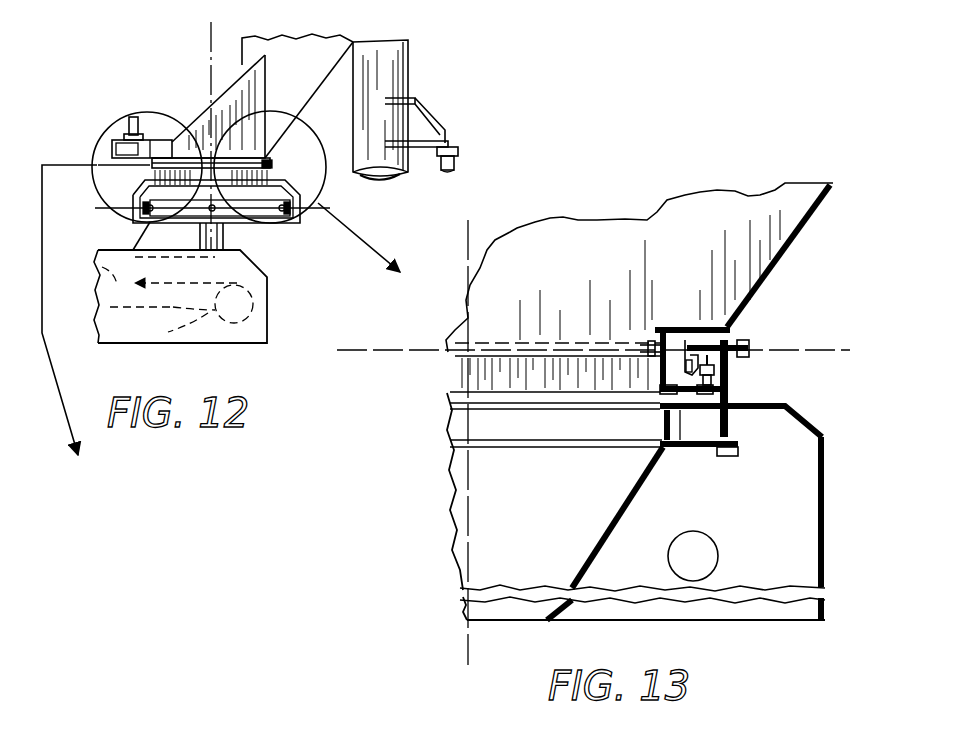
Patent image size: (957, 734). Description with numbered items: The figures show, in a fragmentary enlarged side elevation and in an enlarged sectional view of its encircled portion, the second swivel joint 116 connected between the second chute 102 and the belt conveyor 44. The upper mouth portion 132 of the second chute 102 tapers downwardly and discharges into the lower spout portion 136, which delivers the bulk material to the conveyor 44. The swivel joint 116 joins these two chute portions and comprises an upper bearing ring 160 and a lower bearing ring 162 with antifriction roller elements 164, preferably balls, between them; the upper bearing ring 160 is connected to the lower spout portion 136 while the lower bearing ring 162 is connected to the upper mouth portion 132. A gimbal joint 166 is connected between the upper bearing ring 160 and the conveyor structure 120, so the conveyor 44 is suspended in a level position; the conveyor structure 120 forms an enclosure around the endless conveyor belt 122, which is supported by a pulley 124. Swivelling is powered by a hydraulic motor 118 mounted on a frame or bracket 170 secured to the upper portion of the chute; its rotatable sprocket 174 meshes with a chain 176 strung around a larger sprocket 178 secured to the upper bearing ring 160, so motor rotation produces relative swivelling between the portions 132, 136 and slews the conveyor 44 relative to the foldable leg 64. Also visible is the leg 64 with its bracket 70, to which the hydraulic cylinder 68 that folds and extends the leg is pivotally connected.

In FIG. 12, the conveyor 44 is at (228, 348).
In FIG. 12, the foldable leg 64 is at (412, 67).
In FIG. 12, the hydraulic cylinder 68 is at (458, 160).
In FIG. 12, the bracket 70 is at (446, 122).
In FIG. 12, the second chute 102 is at (240, 52).
In FIG. 13, the second chute 102 is at (785, 263).
In FIG. 12, the second swivel joint 116 is at (282, 171).
In FIG. 13, the second swivel joint 116 is at (757, 387).
In FIG. 12, the hydraulic motor 118 is at (103, 147).
In FIG. 12, the conveyor structure 120 is at (173, 345).
In FIG. 12, the endless conveyor belt 122 is at (97, 263).
In FIG. 12, the pulley 124 is at (183, 325).
In FIG. 12, the upper mouth portion 132 is at (242, 64).
In FIG. 13, the upper mouth portion 132 is at (770, 277).
In FIG. 12, the lower spout portion 136 is at (143, 238).
In FIG. 13, the lower spout portion 136 is at (643, 493).
In FIG. 13, the upper bearing ring 160 is at (682, 360).
In FIG. 13, the lower bearing ring 162 is at (710, 363).
In FIG. 13, the antifriction roller elements 164 is at (688, 357).
In FIG. 12, the gimbal joint 166 is at (250, 224).
In FIG. 12, the frame or bracket 170 is at (165, 140).
In FIG. 12, the rotatable sprocket 174 is at (120, 200).
In FIG. 13, the chain 176 is at (527, 343).
In FIG. 12, the larger sprocket 178 is at (268, 167).
In FIG. 13, the larger sprocket 178 is at (737, 342).